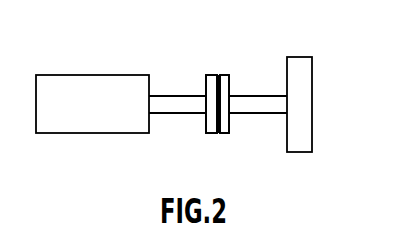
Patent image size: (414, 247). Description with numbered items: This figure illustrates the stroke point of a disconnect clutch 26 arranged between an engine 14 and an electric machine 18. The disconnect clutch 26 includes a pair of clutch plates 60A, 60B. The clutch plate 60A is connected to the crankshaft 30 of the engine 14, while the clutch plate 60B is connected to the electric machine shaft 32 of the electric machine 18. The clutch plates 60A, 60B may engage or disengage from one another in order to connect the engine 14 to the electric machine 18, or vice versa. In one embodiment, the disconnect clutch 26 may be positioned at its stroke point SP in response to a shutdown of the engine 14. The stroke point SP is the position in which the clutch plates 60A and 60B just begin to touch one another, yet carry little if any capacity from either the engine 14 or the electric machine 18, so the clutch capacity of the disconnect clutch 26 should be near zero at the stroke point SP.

The engine 14 is at (78, 133).
The electric machine 18 is at (298, 152).
The disconnect clutch 26 is at (213, 62).
The crankshaft 30 is at (163, 96).
The electric machine shaft 32 is at (247, 96).
The clutch plate 60A is at (209, 133).
The clutch plate 60B is at (222, 133).
The stroke point SP is at (218, 74).